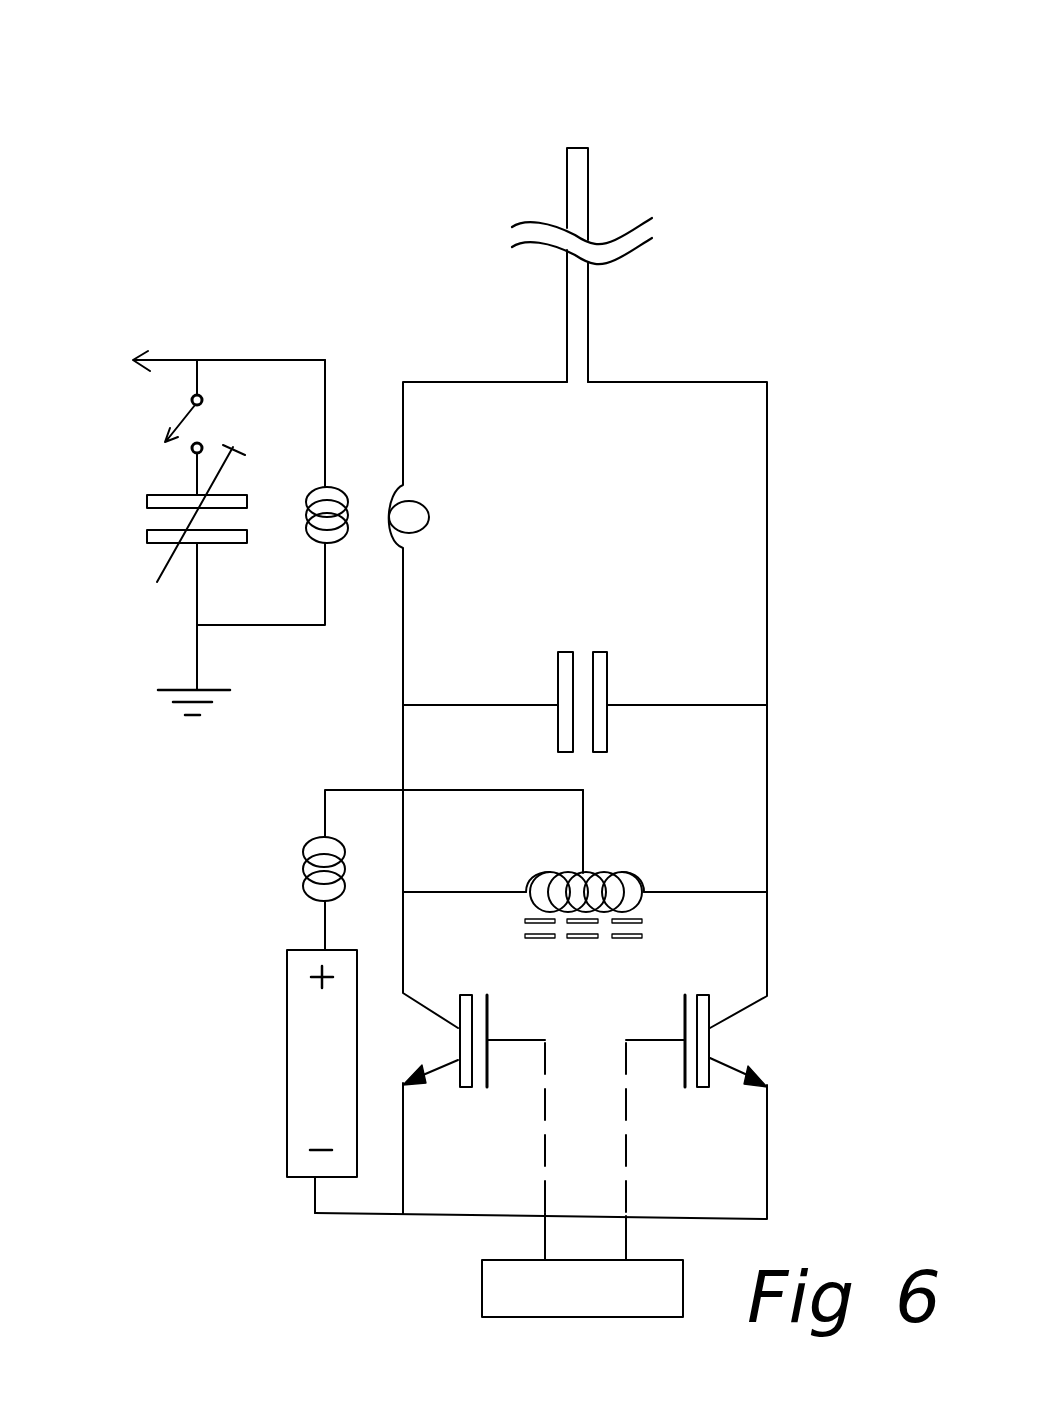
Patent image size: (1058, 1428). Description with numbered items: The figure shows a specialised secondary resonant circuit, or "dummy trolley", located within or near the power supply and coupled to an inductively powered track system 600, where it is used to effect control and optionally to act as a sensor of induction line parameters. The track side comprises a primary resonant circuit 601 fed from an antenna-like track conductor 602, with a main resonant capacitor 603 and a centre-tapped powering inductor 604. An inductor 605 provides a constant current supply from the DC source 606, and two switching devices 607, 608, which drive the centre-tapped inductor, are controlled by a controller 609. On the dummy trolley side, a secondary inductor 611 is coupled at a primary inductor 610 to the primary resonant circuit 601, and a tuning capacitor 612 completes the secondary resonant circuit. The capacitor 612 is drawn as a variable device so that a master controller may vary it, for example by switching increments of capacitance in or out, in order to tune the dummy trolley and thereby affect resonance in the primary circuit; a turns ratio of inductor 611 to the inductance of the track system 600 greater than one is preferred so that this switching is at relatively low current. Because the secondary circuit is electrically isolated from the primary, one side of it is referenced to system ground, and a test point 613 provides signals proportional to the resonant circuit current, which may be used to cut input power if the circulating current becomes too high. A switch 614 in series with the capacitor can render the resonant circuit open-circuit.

The inductively powered track system 600 is at (947, 87).
The primary resonant circuit 601 is at (770, 414).
The antenna 602 is at (588, 198).
The main resonant capacitor 603 is at (613, 728).
The centre-tapped powering inductor 604 is at (593, 947).
The inductor 605 is at (302, 845).
The DC source 606 is at (283, 1072).
The switching device 607 is at (462, 1088).
The switching device 608 is at (694, 1088).
The controller 609 is at (485, 1325).
The primary inductor 610 is at (523, 525).
The secondary inductor 611 is at (310, 473).
The tuning capacitor 612 is at (142, 542).
The test point 613 is at (176, 306).
The switch 614 is at (178, 414).